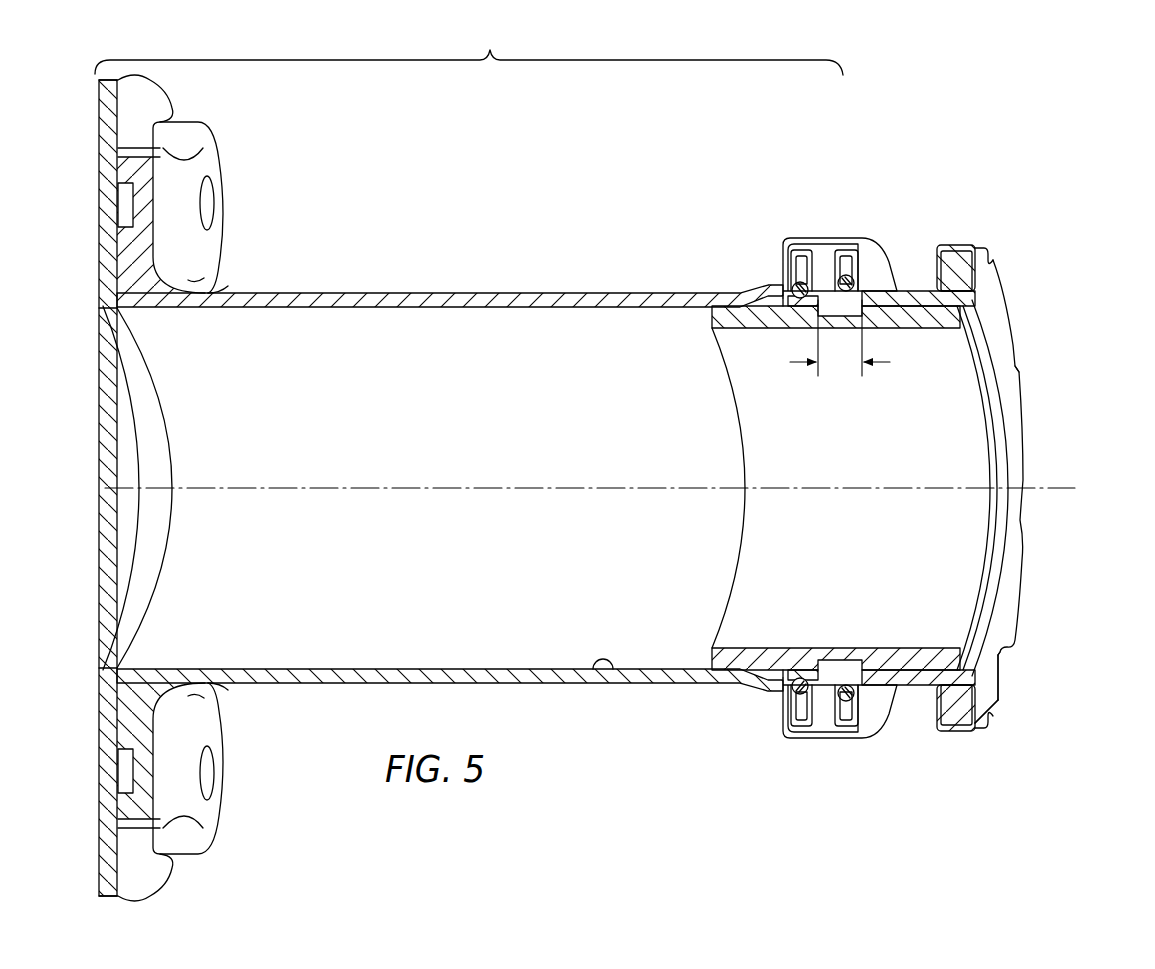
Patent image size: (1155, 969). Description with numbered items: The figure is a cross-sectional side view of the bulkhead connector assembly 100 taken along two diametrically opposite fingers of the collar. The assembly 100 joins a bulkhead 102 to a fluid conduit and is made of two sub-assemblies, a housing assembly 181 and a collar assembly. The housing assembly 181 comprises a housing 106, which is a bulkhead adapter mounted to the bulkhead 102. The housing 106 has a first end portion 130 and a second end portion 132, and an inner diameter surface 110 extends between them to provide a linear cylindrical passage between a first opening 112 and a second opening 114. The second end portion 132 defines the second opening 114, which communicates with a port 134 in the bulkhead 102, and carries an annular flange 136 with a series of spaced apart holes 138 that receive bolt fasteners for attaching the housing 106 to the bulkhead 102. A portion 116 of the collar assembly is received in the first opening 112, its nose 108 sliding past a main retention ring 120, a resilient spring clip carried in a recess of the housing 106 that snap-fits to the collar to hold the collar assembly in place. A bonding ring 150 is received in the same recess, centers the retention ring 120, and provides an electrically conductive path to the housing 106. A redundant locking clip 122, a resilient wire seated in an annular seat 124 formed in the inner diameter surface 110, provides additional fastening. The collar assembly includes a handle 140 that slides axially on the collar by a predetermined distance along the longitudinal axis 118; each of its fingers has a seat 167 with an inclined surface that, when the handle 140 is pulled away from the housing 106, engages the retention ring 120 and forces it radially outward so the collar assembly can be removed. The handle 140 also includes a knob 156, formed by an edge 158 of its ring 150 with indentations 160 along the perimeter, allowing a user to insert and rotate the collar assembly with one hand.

The bulkhead connector assembly 100 is at (668, 228).
The bulkhead 102 is at (118, 112).
The housing 106 is at (356, 292).
The nose 108 is at (712, 303).
The inner diameter surface 110 is at (600, 672).
The first opening 112 is at (866, 697).
The second opening 114 is at (177, 565).
The portion of the collar assembly 116 is at (690, 650).
The longitudinal axis 118 is at (1068, 505).
The main retention ring 120 is at (790, 286).
The redundant locking clip 122 is at (847, 276).
The annular seat 124 is at (850, 732).
The first end portion 130 is at (890, 258).
The second end portion 132 is at (228, 290).
The port 134 is at (118, 670).
The annular flange 136 is at (224, 150).
The holes 138 is at (208, 208).
The handle 140 is at (1008, 277).
The ring 150 is at (784, 250).
The knob 156 is at (978, 722).
The edge 158 is at (1025, 440).
The indentations 160 is at (986, 262).
The seat 167 is at (800, 262).
The housing assembly 181 is at (469, 45).